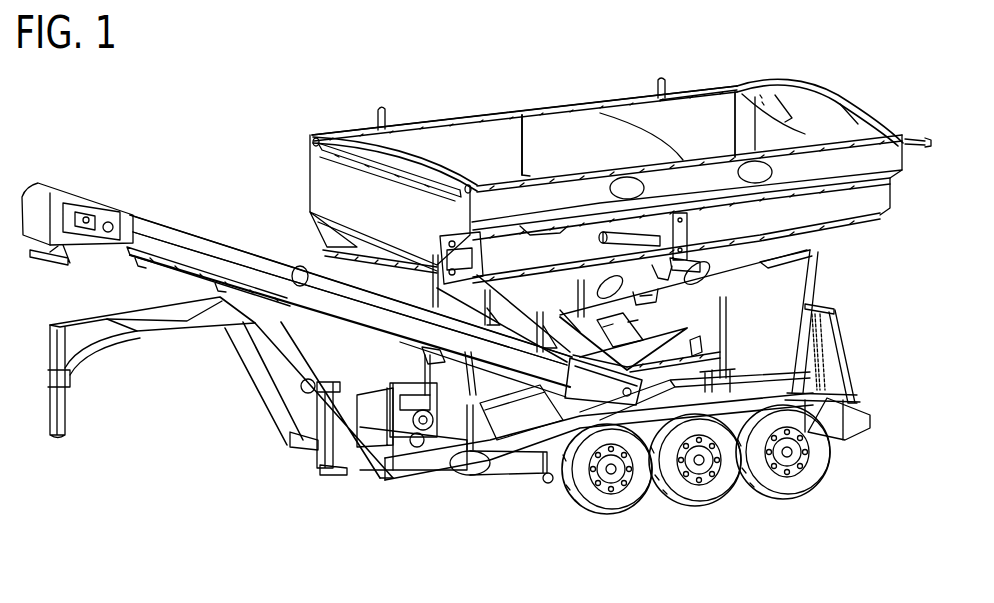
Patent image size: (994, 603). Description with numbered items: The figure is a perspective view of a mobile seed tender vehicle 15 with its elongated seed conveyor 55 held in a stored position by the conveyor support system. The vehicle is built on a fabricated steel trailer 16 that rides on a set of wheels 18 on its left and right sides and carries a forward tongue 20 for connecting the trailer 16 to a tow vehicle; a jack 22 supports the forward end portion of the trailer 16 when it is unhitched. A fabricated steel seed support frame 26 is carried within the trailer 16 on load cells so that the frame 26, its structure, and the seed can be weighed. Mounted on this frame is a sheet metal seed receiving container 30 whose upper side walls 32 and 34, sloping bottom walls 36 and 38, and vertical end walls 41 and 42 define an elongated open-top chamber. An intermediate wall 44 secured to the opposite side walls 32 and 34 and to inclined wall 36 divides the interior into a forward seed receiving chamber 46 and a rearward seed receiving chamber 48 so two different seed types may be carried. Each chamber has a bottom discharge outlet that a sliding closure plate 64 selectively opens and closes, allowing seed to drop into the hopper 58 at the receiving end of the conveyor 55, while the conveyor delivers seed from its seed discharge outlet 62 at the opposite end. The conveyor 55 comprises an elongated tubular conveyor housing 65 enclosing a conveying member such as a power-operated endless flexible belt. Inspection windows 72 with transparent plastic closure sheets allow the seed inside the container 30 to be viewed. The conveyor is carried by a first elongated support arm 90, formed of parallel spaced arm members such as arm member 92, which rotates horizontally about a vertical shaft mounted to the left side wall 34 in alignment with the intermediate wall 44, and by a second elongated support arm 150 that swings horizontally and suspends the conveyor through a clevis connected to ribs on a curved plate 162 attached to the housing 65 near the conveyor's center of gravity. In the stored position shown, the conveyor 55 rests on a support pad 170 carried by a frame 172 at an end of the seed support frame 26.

The mobile seed tender vehicle 15 is at (441, 108).
The trailer 16 is at (460, 486).
The wheels 18 is at (797, 490).
The tongue 20 is at (208, 335).
The jack 22 is at (325, 463).
The seed support frame 26 is at (455, 438).
The seed receiving container 30 is at (692, 86).
The upper side wall 32 is at (643, 117).
The upper side wall 34 is at (845, 215).
The inclined bottom wall 36 is at (772, 262).
The inclined bottom wall 38 is at (522, 306).
The vertical end wall 41 is at (328, 178).
The vertical end wall 42 is at (802, 127).
The intermediate wall 44 is at (573, 122).
The forward seed receiving chamber 46 is at (503, 154).
The rearward seed receiving chamber 48 is at (713, 138).
The seed conveyor 55 is at (226, 230).
The hopper 58 is at (662, 328).
The seed discharge outlet 62 is at (48, 258).
The sliding closure plate 64 is at (598, 345).
The tubular conveyor housing 65 is at (243, 253).
The inspection windows 72 is at (750, 172).
The first elongated support arm 90 is at (601, 211).
The arm member 92 is at (541, 232).
The second elongated support arm 150 is at (369, 240).
The curved plate 162 is at (323, 283).
The support pad 170 is at (823, 307).
The frame 172 is at (840, 348).